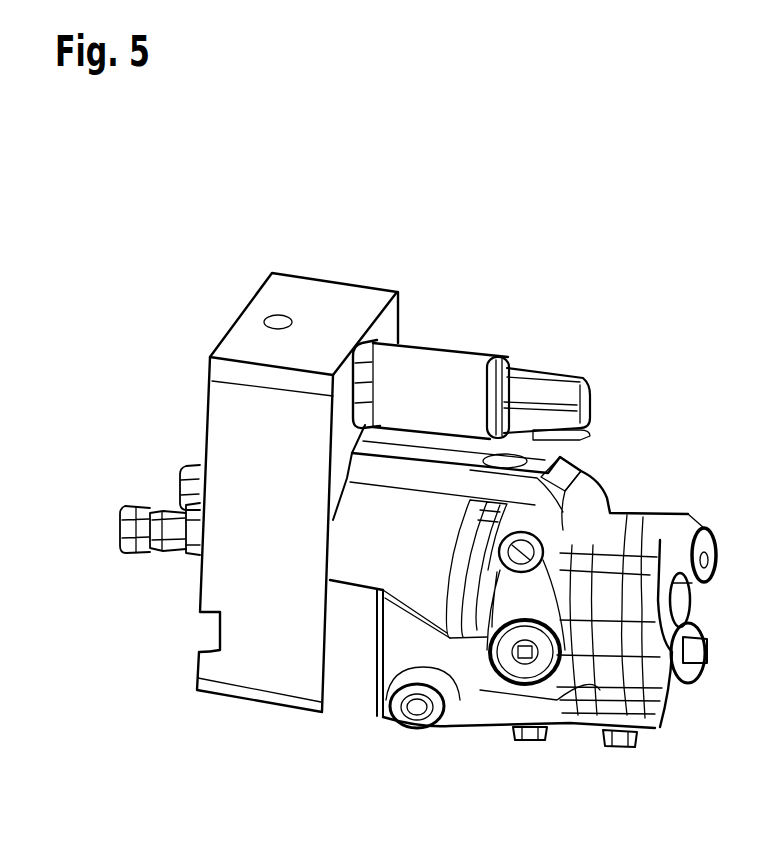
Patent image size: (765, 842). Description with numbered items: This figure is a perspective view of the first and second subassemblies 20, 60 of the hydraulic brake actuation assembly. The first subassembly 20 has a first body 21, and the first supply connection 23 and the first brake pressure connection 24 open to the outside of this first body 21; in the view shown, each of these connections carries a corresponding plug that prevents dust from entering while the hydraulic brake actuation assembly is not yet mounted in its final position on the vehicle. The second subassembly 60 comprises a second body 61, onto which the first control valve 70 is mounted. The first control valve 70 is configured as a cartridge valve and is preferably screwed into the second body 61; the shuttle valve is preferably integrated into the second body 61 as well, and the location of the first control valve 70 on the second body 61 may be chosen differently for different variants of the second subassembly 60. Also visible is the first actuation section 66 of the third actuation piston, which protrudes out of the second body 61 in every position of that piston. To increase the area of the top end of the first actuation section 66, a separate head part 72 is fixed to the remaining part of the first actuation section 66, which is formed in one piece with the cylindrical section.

The first control valve 70 is at (472, 368).
The head part 72 is at (188, 487).
The first actuation section 66 is at (190, 541).
The second subassembly 60 is at (297, 523).
The second body 61 is at (258, 667).
The first subassembly 20 is at (524, 614).
The first body 21 is at (467, 703).
The first supply connection 23 is at (533, 742).
The first brake pressure connection 24 is at (618, 749).